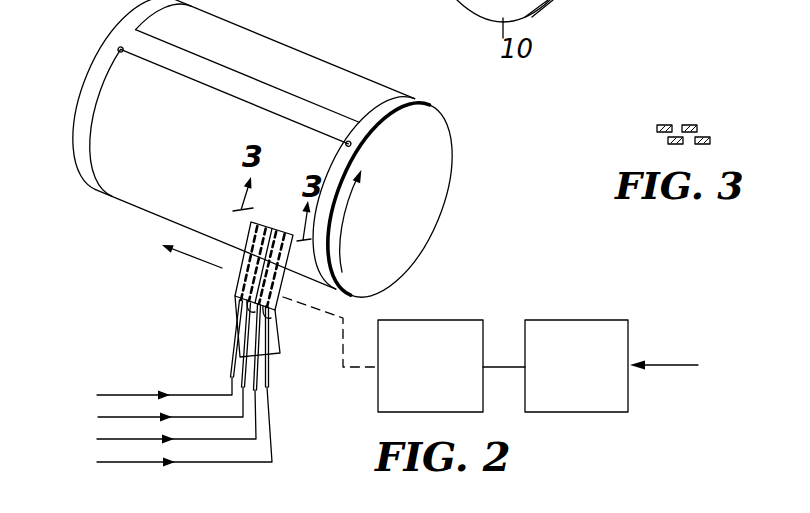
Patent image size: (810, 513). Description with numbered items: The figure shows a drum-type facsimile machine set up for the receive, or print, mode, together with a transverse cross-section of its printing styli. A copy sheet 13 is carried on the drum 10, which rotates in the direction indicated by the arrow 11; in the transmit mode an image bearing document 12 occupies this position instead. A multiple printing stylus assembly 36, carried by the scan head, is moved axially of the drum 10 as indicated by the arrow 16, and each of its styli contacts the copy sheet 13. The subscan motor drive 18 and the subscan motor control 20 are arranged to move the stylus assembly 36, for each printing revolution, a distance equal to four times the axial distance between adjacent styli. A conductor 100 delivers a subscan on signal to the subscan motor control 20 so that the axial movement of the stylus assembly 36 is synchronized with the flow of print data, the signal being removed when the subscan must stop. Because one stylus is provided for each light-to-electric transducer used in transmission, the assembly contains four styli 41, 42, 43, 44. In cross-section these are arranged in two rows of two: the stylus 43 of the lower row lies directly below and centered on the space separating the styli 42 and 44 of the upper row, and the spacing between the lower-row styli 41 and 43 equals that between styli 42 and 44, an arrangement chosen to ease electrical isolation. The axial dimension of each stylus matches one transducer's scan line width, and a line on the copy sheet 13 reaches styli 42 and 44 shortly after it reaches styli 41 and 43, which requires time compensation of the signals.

In FIG. 2, the drum 10 is at (395, 106).
In FIG. 2, the arrow indicating drum rotation direction 11 is at (347, 211).
In FIG. 2, the image bearing document 12 is at (592, 0).
In FIG. 2, the copy sheet 13 is at (293, 63).
In FIG. 2, the arrow indicating axial movement 16 is at (185, 254).
In FIG. 2, the subscan motor drive 18 is at (463, 320).
In FIG. 2, the subscan motor control 20 is at (582, 320).
In FIG. 2, the multiple printing stylus assembly 36 is at (280, 333).
In FIG. 2, the stylus 41 is at (288, 228).
In FIG. 3, the stylus 41 is at (710, 140).
In FIG. 2, the stylus 42 is at (284, 228).
In FIG. 3, the stylus 42 is at (693, 125).
In FIG. 2, the stylus 43 is at (257, 227).
In FIG. 3, the stylus 43 is at (668, 140).
In FIG. 2, the stylus 44 is at (247, 210).
In FIG. 3, the stylus 44 is at (662, 125).
In FIG. 2, the conductor 100 is at (679, 367).